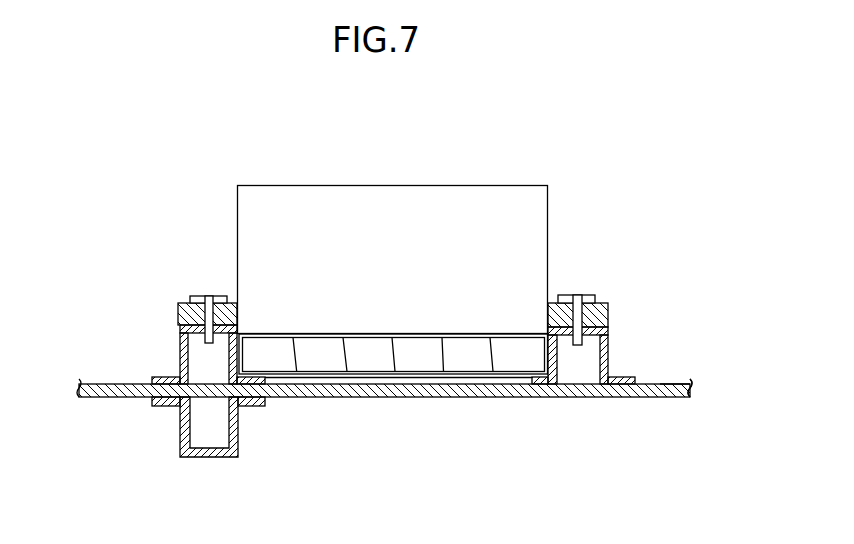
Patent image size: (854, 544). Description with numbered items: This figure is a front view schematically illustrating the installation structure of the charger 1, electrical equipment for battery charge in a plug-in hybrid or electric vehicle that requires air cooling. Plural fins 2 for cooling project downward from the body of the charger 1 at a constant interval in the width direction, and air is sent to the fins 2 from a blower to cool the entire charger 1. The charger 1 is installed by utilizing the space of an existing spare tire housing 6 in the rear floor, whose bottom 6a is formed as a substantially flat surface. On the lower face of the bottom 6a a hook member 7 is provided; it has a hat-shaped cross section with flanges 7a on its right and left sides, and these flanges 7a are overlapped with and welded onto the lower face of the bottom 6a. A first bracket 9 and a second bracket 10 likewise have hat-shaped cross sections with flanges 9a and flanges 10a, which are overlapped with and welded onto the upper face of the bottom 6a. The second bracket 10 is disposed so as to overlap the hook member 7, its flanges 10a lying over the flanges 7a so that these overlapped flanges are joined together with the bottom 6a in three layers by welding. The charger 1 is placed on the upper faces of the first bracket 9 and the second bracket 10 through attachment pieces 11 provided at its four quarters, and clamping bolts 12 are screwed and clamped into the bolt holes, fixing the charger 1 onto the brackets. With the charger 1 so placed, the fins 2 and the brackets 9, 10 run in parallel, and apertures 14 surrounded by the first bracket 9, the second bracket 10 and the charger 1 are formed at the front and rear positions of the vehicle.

The charger 1 is at (487, 181).
The fins 2 is at (440, 362).
The spare tire housing 6 is at (95, 397).
The bottom 6a is at (672, 385).
The hook member 7 is at (202, 457).
The flanges 7a is at (168, 404).
The first bracket 9 is at (607, 343).
The flanges 9a is at (625, 378).
The second bracket 10 is at (180, 345).
The flanges 10a is at (158, 377).
The attachment pieces 11 is at (180, 303).
The clamping bolts 12 is at (212, 296).
The apertures 14 is at (377, 365).